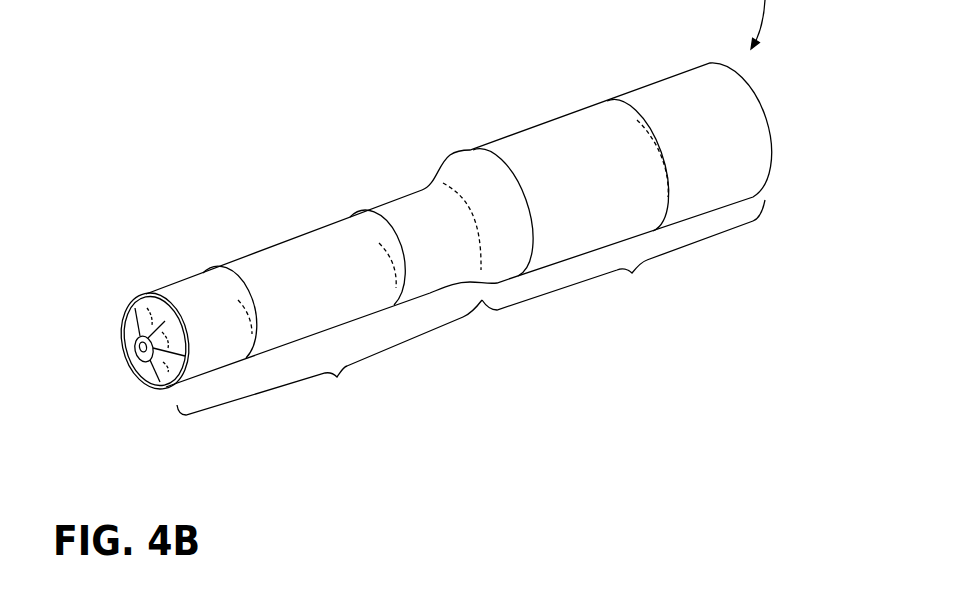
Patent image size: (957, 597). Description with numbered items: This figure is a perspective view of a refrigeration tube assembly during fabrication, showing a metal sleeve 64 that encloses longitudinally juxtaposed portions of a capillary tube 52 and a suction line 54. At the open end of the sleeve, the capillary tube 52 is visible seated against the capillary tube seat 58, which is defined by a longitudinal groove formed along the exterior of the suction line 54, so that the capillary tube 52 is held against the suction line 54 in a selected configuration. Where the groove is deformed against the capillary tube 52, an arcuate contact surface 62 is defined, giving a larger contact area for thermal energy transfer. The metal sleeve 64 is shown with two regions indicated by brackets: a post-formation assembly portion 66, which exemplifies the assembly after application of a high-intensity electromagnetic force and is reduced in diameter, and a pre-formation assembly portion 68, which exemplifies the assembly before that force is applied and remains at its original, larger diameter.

The capillary tube 52 is at (135, 348).
The suction line 54 is at (140, 313).
The capillary tube seat 58 is at (158, 298).
The arcuate contact surface 62 is at (155, 383).
The metal sleeve 64 is at (750, 127).
The post-formation assembly portion 66 is at (329, 312).
The pre-formation assembly portion 68 is at (604, 205).